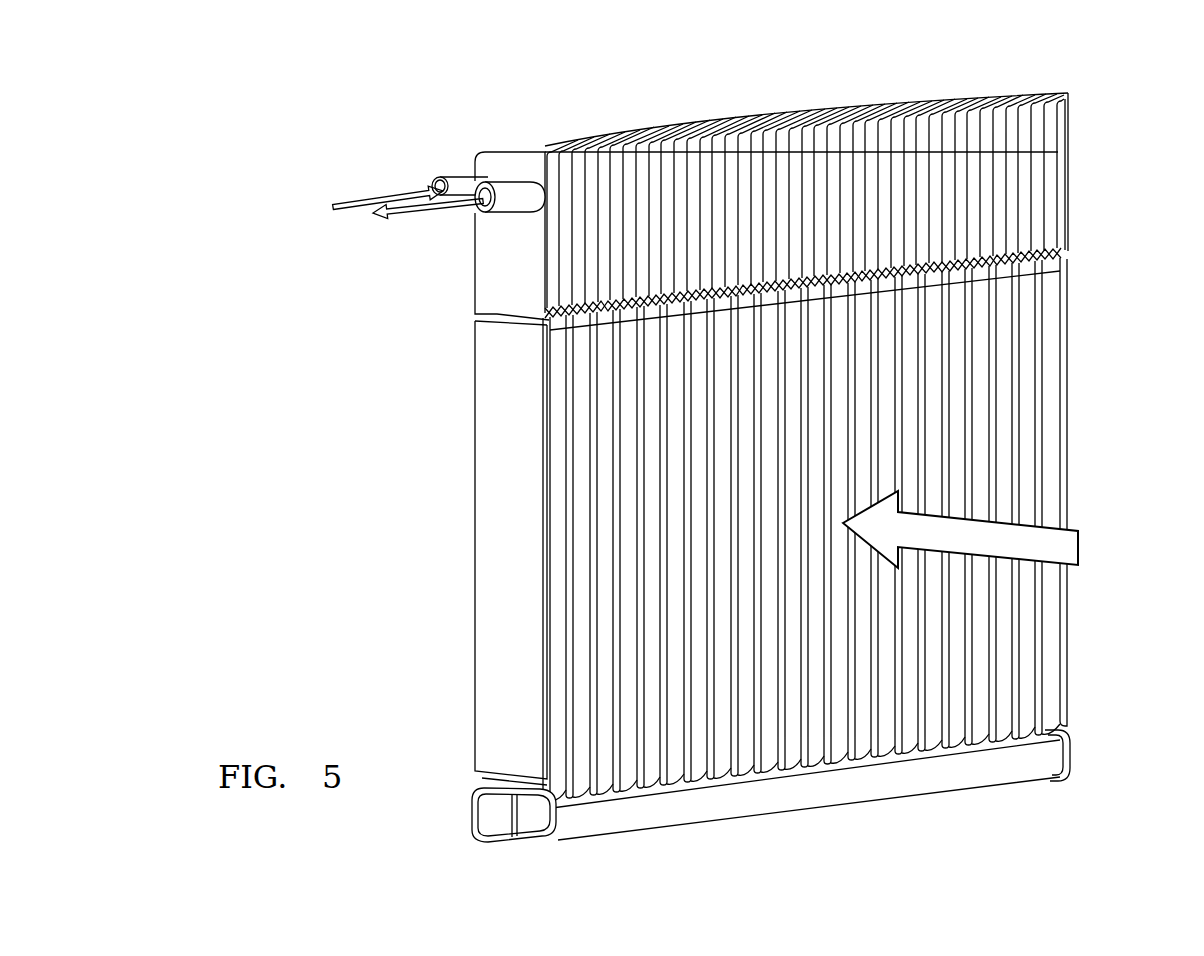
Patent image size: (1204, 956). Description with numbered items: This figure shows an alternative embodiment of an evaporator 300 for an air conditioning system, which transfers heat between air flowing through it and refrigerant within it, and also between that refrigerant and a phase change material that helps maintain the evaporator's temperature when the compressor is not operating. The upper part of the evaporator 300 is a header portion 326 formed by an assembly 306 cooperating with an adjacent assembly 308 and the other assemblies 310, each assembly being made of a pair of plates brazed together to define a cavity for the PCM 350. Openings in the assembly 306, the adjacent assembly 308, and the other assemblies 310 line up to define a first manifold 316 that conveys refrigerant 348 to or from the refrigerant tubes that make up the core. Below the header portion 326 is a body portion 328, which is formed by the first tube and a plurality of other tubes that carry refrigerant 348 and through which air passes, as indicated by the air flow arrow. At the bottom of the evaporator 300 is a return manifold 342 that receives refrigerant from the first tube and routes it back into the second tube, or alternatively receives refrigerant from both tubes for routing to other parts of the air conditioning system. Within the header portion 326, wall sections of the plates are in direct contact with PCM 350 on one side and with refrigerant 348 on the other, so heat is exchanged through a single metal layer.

The evaporator 300 is at (415, 105).
The assembly 306 is at (822, 176).
The adjacent assembly 308 is at (810, 162).
The other assemblies 310 is at (1010, 80).
The first manifold 316 is at (450, 176).
The header portion 326 is at (1082, 100).
The body portion 328 is at (1082, 262).
The return manifold 342 is at (1058, 752).
The refrigerant 348 is at (405, 210).
The PCM 350 is at (490, 282).